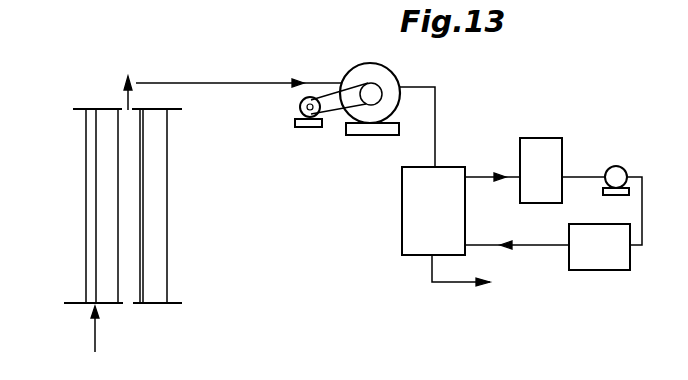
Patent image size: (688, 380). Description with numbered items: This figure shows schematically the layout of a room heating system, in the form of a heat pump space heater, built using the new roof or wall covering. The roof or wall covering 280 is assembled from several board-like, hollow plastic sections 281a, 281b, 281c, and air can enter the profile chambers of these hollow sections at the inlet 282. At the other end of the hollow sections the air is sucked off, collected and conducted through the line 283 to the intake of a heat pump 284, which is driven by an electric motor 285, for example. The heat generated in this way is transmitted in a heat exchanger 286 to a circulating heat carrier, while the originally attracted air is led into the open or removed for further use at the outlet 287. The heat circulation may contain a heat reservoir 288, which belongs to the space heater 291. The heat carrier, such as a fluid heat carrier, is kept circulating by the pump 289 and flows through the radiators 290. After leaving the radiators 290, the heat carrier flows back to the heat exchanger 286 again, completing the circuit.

The roof or wall covering 280 is at (124, 206).
The hollow plastic section 281a is at (157, 193).
The hollow plastic section 281b is at (135, 167).
The hollow plastic section 281c is at (105, 140).
The air inlet 282 is at (95, 344).
The line 283 is at (233, 80).
The heat pump 284 is at (412, 67).
The electric motor 285 is at (310, 127).
The heat exchanger 286 is at (402, 220).
The air outlet 287 is at (450, 283).
The heat reservoir 288 is at (535, 148).
The pump 289 is at (614, 164).
The radiators 290 is at (603, 257).
The space heater 291 is at (553, 178).